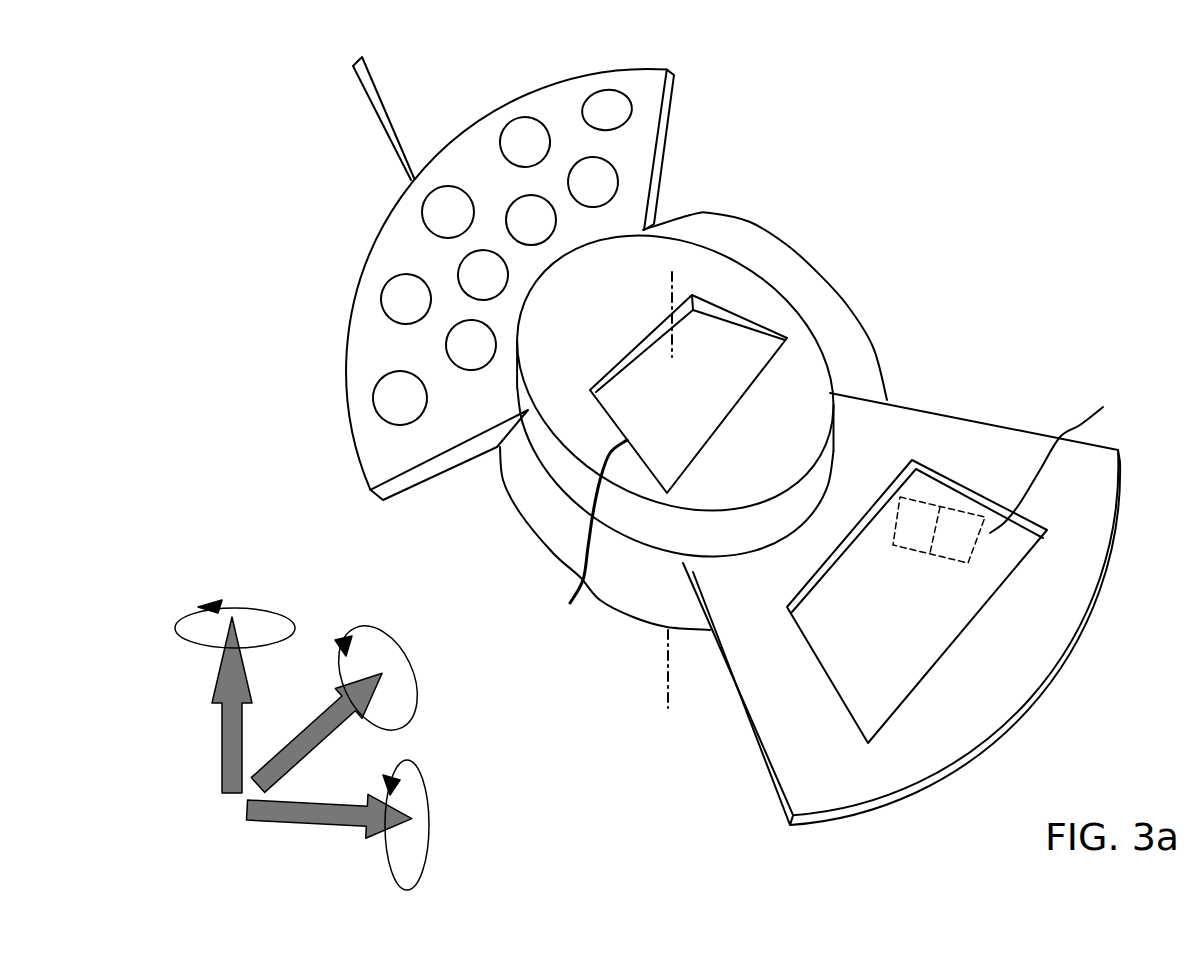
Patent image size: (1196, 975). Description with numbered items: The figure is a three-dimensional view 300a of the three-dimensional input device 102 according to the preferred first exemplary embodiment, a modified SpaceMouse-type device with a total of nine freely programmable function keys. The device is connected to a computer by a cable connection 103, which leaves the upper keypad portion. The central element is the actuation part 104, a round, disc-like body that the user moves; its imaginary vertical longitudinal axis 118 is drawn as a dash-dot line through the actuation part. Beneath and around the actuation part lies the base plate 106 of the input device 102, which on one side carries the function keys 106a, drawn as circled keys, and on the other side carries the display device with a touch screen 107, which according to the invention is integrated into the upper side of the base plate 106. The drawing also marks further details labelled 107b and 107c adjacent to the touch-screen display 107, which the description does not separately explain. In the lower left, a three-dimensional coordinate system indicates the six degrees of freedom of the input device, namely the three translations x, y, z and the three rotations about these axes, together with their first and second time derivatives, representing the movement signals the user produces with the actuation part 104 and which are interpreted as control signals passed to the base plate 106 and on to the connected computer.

The three-dimensional view 300a is at (646, 473).
The 3D input device 102 is at (504, 284).
The cable connection 103 is at (367, 98).
The actuation part 104 is at (663, 478).
The base plate 106 is at (978, 447).
The function keys 106a is at (607, 170).
The display device with a touch screen 107 is at (837, 663).
The connecting cable 107b is at (590, 538).
The display cable 107c is at (998, 477).
The vertical longitudinal axis 118 is at (663, 327).